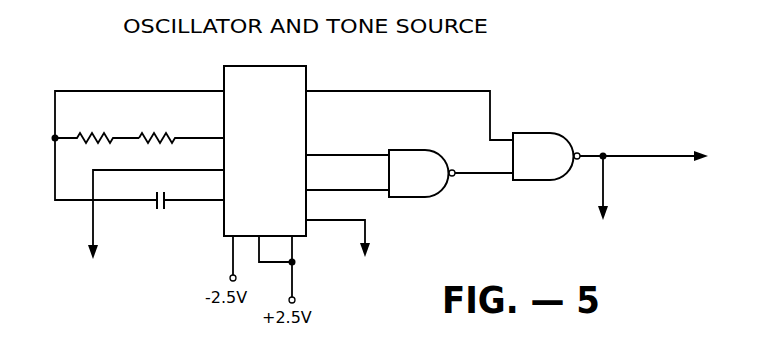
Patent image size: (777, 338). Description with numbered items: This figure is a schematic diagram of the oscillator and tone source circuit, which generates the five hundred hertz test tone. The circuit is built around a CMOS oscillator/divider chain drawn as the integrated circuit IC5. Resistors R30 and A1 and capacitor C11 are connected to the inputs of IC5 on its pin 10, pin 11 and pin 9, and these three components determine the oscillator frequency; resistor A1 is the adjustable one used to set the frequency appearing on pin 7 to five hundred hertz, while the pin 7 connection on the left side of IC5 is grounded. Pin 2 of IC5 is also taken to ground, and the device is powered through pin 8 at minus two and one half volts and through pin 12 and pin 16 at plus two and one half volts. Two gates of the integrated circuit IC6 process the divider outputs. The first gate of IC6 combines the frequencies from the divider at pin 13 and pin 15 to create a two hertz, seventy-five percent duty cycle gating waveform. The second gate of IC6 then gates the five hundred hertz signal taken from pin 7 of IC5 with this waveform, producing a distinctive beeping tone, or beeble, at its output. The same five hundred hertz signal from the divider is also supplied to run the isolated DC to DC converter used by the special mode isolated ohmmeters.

The oscillator integrated circuit IC5 is at (265, 151).
The NAND gate integrated circuit IC6 is at (484, 165).
The resistor R30 is at (97, 119).
The resistor A1 is at (180, 119).
The capacitor C11 is at (157, 223).
The IC5 pin 2 is at (338, 230).
The pin 7 is at (356, 120).
The pin 8 is at (370, 203).
The pin 9 is at (356, 177).
The pin 10 is at (399, 136).
The pin 11 is at (337, 120).
The pin 12 is at (324, 199).
The pin 13 is at (348, 164).
The pin 15 is at (347, 181).
The pin 16 is at (303, 269).